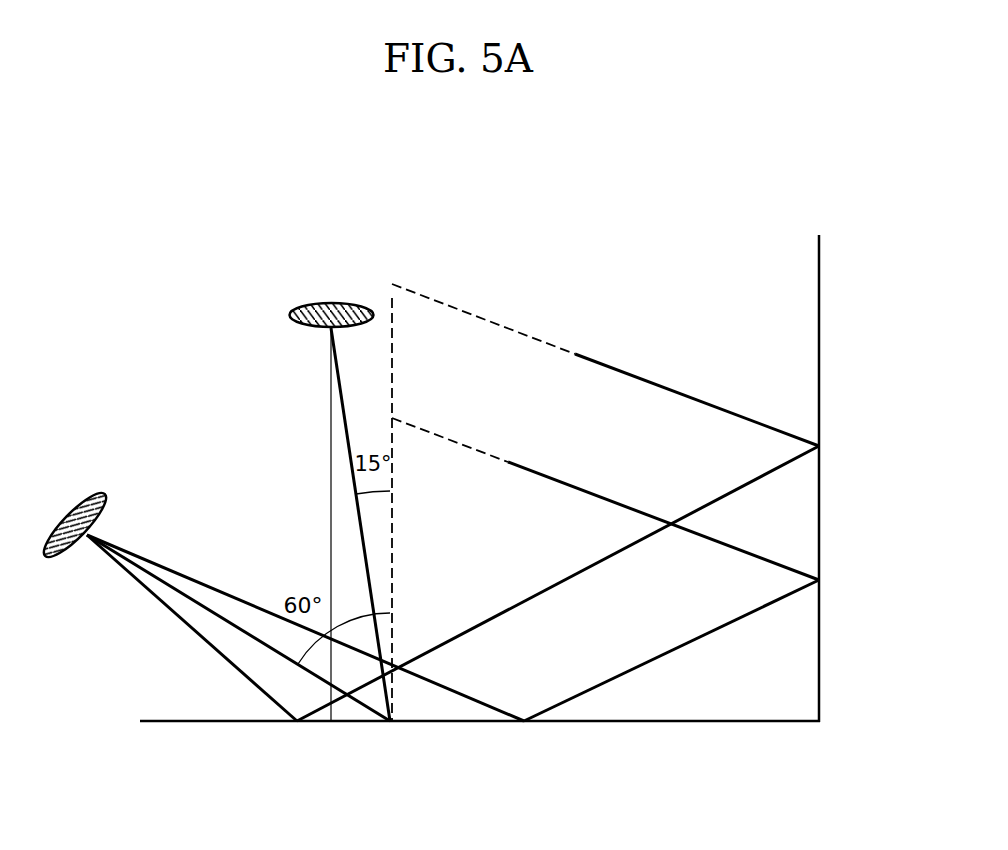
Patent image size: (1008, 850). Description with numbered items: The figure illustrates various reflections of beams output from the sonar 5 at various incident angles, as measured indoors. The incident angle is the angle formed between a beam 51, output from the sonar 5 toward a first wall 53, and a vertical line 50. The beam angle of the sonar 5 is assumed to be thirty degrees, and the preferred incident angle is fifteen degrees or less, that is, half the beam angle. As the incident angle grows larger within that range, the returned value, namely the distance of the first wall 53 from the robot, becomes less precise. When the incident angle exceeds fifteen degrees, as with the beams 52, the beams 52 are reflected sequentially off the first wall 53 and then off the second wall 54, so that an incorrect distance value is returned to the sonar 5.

The sonar 5 is at (331, 303).
The vertical line 50 is at (392, 343).
The beam 51 is at (345, 430).
The beams 52 is at (247, 603).
The first wall 53 is at (720, 723).
The second wall 54 is at (821, 655).